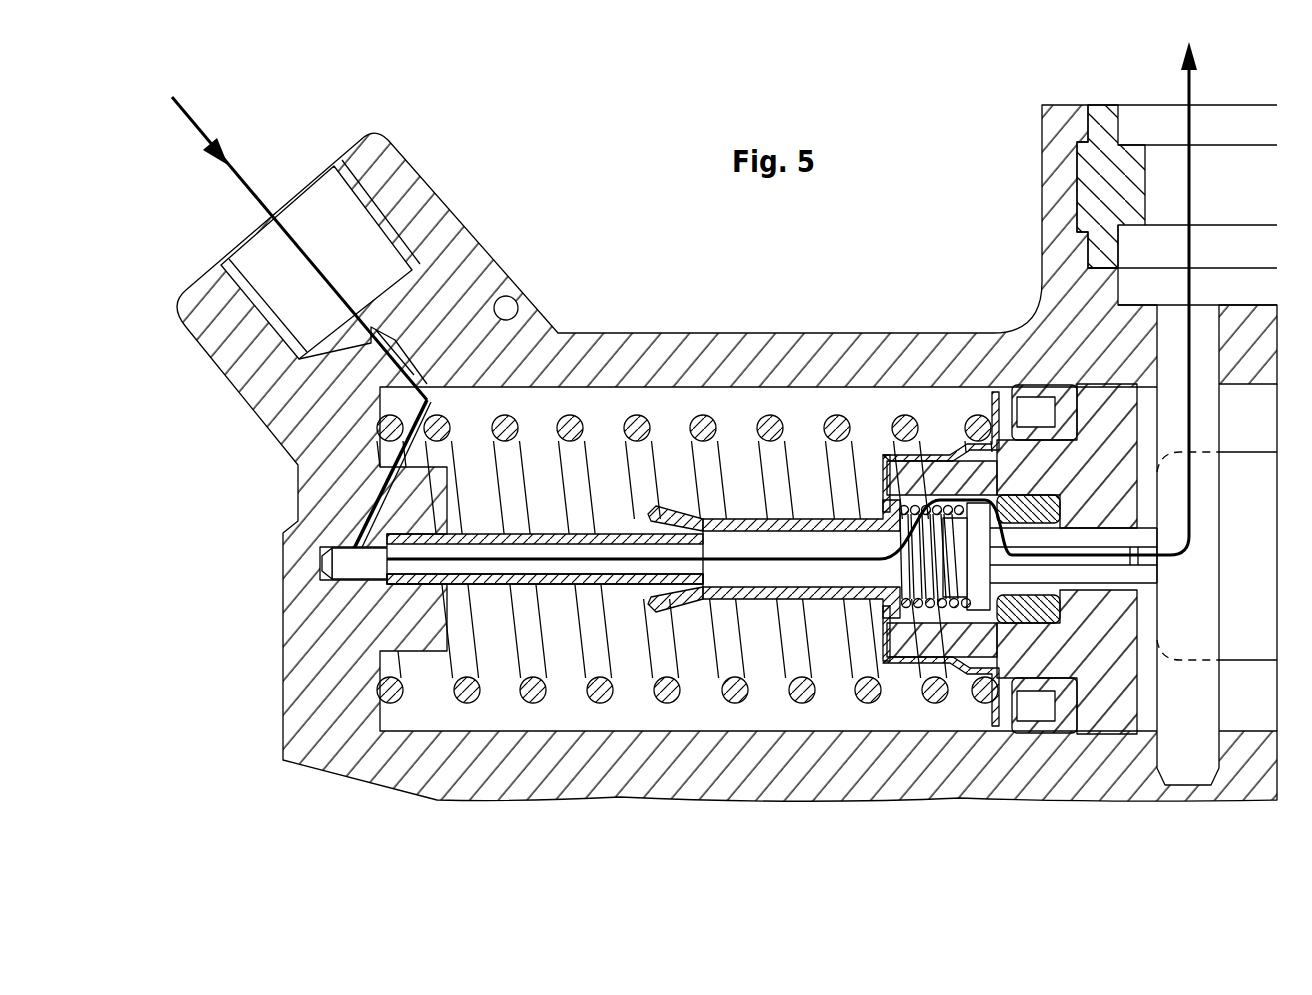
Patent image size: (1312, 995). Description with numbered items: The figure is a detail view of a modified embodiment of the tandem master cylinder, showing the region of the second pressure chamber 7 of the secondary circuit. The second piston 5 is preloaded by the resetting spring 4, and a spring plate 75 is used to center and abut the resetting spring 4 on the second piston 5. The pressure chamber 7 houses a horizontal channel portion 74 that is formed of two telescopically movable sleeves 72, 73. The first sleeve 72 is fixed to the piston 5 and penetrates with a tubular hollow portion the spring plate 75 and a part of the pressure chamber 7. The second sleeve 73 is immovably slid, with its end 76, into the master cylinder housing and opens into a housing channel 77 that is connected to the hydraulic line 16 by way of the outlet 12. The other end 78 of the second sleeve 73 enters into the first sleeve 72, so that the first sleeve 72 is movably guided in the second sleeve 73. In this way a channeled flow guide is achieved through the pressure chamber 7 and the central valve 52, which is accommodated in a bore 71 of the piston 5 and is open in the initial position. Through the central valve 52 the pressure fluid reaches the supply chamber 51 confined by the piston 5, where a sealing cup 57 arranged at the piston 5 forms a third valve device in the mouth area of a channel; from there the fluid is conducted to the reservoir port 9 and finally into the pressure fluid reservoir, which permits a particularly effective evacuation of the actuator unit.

The second resetting spring 4 is at (802, 692).
The second piston 5 is at (1116, 669).
The second pressure chamber 7 is at (568, 718).
The reservoir port 9 is at (1162, 112).
The outlet 12 is at (453, 232).
The hydraulic line 16 is at (245, 180).
The supply chamber 51 is at (1249, 701).
The central valve 52 is at (920, 615).
The sealing cup 57 is at (1045, 392).
The bore 71 is at (927, 503).
The first sleeve 72 is at (703, 592).
The second sleeve 73 is at (500, 583).
The horizontal channel portion 74 is at (748, 543).
The spring plate 75 is at (876, 468).
The end of second sleeve 76 is at (407, 583).
The housing channel 77 is at (357, 522).
The other end of second sleeve 78 is at (687, 537).